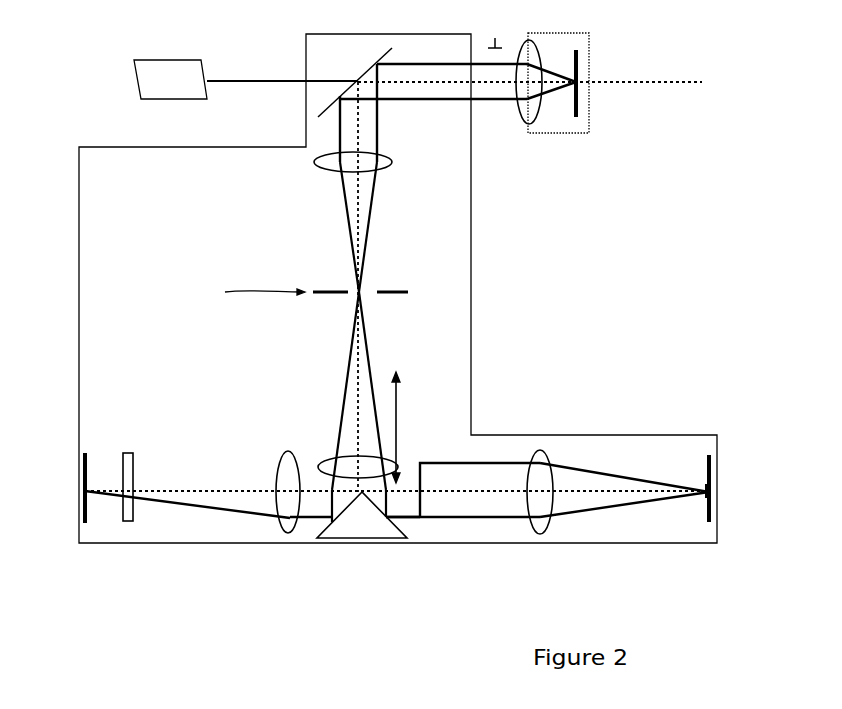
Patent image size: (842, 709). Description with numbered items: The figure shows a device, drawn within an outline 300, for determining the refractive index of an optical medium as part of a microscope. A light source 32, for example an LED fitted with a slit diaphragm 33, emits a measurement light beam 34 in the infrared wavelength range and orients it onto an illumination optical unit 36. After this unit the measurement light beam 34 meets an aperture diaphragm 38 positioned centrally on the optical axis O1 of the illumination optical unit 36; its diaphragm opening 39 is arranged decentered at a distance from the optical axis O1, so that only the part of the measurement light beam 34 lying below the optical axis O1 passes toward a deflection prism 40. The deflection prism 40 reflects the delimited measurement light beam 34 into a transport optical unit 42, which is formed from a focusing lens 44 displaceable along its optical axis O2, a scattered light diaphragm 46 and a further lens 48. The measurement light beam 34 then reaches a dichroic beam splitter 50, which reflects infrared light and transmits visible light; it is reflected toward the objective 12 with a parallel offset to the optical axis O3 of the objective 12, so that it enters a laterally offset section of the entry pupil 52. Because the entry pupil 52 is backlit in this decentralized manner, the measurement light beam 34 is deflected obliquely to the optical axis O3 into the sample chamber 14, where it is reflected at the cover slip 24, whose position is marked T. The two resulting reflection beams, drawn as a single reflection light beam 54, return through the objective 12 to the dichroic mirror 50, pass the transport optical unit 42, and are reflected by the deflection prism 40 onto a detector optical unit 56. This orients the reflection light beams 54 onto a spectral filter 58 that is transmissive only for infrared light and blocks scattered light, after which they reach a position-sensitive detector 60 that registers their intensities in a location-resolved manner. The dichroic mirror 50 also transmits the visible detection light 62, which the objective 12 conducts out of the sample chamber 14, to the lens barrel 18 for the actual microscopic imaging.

The interferometer housing 300 is at (472, 260).
The lens barrel 18 is at (171, 59).
The visible detection light 62 is at (272, 80).
The dichroic beam splitter 50 is at (322, 104).
The reflection light beams 54 is at (442, 64).
The measurement light beam 34 is at (445, 100).
The diaphragm opening 39 is at (425, 510).
The aperture diaphragm 38 is at (420, 525).
The entry pupil 52 is at (500, 40).
The target T is at (493, 118).
The objective 12 is at (540, 125).
The cover slip 24 is at (590, 53).
The sample chamber 14 is at (589, 125).
The further lens 48 is at (393, 162).
The scattered light diaphragm 46 is at (408, 290).
The transport optical unit 42 is at (249, 292).
The focusing lens 44 is at (368, 456).
The position-sensitive detector 60 is at (83, 466).
The spectral filter 58 is at (135, 460).
The detector optical unit 56 is at (287, 534).
The deflection prism 40 is at (362, 532).
The illumination optical unit 36 is at (545, 455).
The light source 32 is at (713, 470).
The slit diaphragm 33 is at (712, 497).
The optical axis of the illumination optical unit O1 is at (480, 492).
The optical axis of the focusing lens O2 is at (357, 400).
The optical axis of the objective O3 is at (675, 85).